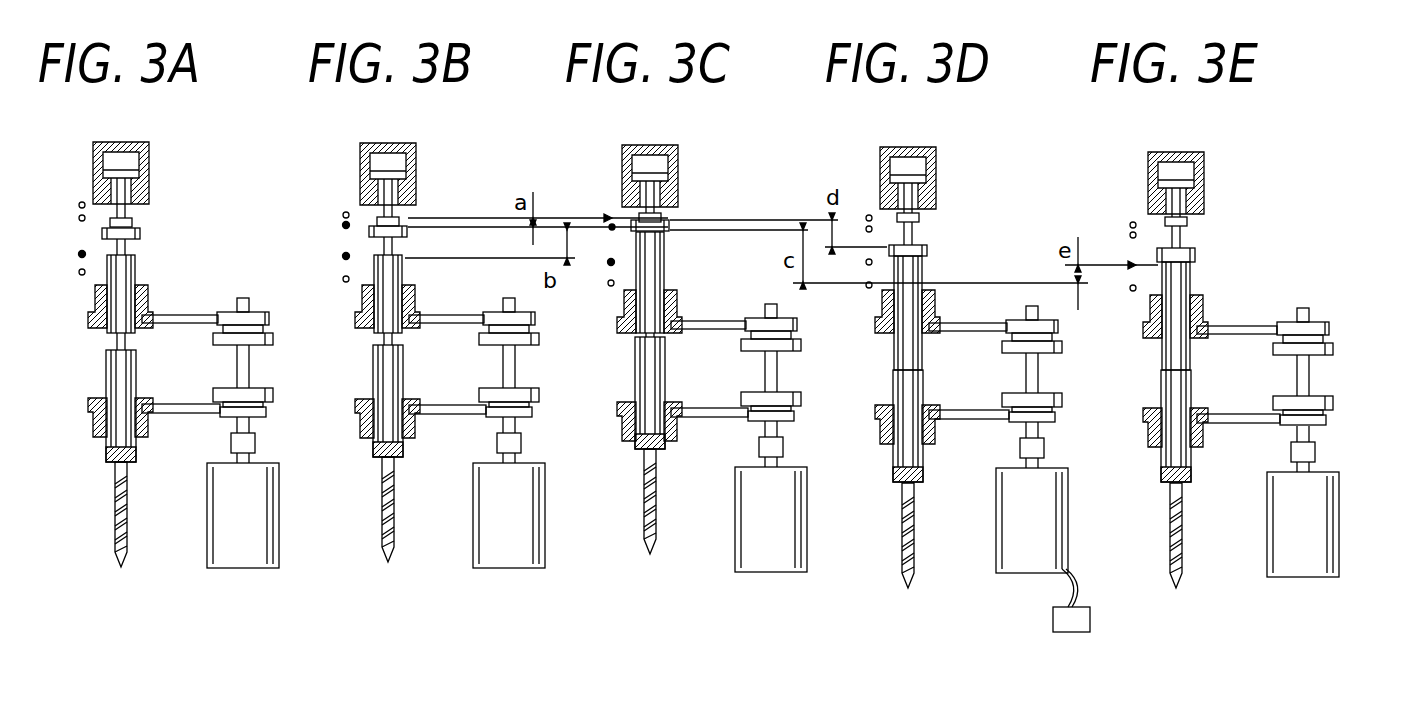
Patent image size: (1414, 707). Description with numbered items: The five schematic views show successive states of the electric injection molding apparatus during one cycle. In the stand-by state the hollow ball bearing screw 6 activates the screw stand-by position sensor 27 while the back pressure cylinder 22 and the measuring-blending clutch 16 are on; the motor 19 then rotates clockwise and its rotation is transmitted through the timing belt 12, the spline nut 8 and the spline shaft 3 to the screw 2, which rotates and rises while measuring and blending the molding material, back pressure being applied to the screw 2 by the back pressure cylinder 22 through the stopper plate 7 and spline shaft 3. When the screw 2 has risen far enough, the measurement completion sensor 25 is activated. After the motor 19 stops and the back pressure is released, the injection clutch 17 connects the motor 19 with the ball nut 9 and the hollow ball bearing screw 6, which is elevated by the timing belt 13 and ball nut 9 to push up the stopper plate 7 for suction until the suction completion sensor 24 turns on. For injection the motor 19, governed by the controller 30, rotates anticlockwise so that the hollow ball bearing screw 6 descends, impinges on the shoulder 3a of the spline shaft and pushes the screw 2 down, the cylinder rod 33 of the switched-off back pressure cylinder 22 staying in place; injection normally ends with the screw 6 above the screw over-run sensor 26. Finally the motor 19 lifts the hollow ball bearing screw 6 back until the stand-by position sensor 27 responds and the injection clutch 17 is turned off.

In FIG. 3A, the screw 2 is at (115, 531).
In FIG. 3A, the spline shaft 3 is at (138, 372).
In FIG. 3D, the shoulder of the spline shaft 3a is at (925, 376).
In FIG. 3A, the hollow ball bearing screw 6 is at (136, 268).
In FIG. 3C, the hollow ball bearing screw 6 is at (665, 270).
In FIG. 3D, the hollow ball bearing screw 6 is at (942, 301).
In FIG. 3E, the hollow ball bearing screw 6 is at (1193, 278).
In FIG. 3C, the stopper plate 7 is at (670, 222).
In FIG. 3A, the spline nut 8 is at (98, 437).
In FIG. 3C, the ball nut 9 is at (683, 294).
In FIG. 3A, the timing belt 12 is at (190, 414).
In FIG. 3C, the timing belt 13 is at (705, 330).
In FIG. 3A, the measuring-blending clutch 16 is at (274, 392).
In FIG. 3C, the measuring-blending clutch 16 is at (800, 400).
In FIG. 3E, the measuring-blending clutch 16 is at (1334, 404).
In FIG. 3A, the injection clutch 17 is at (274, 338).
In FIG. 3C, the injection clutch 17 is at (800, 350).
In FIG. 3D, the injection clutch 17 is at (1062, 346).
In FIG. 3E, the injection clutch 17 is at (1334, 347).
In FIG. 3A, the motor 19 is at (207, 515).
In FIG. 3B, the motor 19 is at (546, 528).
In FIG. 3C, the motor 19 is at (808, 520).
In FIG. 3D, the motor 19 is at (1068, 520).
In FIG. 3E, the motor 19 is at (1340, 545).
In FIG. 3A, the back pressure cylinder 22 is at (150, 165).
In FIG. 3C, the suction completion sensor 24 is at (608, 218).
In FIG. 3B, the measurement completion sensor 25 is at (344, 225).
In FIG. 3D, the screw over-run sensor 26 is at (866, 288).
In FIG. 3A, the screw stand-by position sensor 27 is at (80, 254).
In FIG. 3E, the screw stand-by position sensor 27 is at (1128, 265).
In FIG. 3D, the controller 30 is at (1090, 620).
In FIG. 3D, the cylinder rod 33 is at (940, 183).